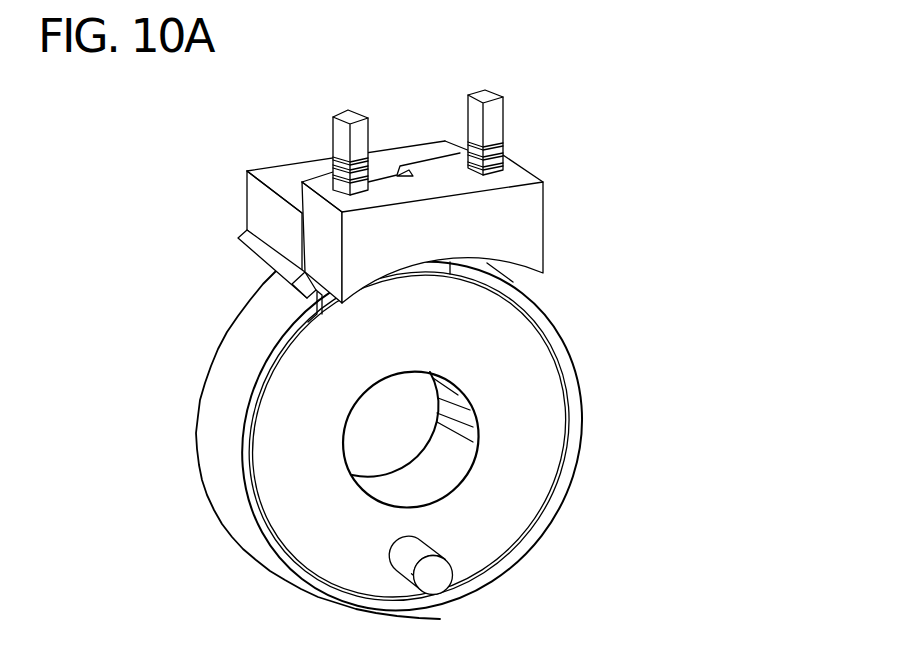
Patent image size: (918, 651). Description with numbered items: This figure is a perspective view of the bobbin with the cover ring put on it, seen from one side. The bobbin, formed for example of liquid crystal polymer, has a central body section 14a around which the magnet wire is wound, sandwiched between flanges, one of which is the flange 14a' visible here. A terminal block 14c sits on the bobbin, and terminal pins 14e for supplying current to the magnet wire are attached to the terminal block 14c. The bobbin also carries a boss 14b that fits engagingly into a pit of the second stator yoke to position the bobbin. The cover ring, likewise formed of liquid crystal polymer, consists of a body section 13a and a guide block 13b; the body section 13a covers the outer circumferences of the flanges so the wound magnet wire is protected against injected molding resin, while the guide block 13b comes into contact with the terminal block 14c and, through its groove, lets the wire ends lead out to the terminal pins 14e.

The body section 13a is at (567, 338).
The guide block 13b is at (263, 208).
The body section 14a is at (490, 448).
The flange 14a' is at (524, 424).
The boss 14b is at (433, 578).
The terminal block 14c is at (532, 215).
The terminal pins 14e is at (351, 113).